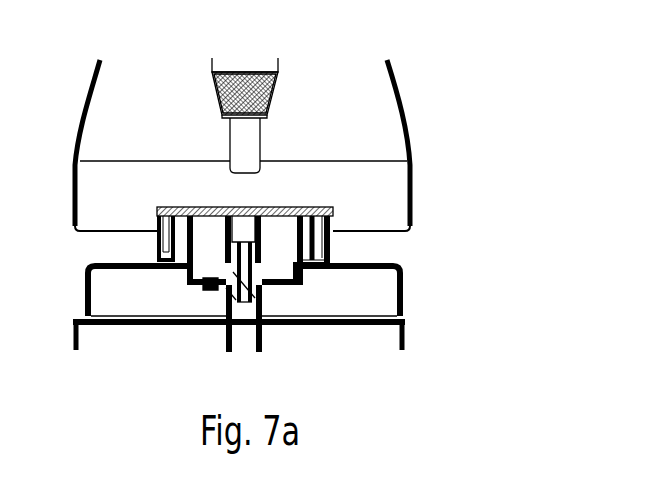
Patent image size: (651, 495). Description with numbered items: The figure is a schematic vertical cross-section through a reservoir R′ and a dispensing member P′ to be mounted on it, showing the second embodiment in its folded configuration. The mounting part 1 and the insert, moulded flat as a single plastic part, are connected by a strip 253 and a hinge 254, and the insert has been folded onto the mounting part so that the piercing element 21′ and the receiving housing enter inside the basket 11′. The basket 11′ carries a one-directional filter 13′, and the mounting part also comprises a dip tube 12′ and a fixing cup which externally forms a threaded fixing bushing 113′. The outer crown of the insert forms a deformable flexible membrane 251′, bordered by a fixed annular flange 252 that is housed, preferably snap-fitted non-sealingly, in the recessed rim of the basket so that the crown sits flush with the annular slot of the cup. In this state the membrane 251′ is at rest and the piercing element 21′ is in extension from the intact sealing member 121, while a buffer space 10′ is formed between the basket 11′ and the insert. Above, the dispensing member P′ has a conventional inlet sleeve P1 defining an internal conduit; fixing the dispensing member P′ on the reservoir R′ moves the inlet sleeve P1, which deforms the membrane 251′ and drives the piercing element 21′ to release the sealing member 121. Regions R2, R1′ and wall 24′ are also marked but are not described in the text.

The fixed annular flange 252 is at (197, 207).
The deformable flexible membrane 251′ is at (230, 243).
The dispensing member P′ is at (284, 52).
The inlet sleeve P1 is at (243, 138).
The strip 253 is at (306, 210).
The hinge 254 is at (342, 215).
The mounting part 1 is at (337, 229).
The second recess R2 is at (333, 247).
The first recess body R1′ is at (414, 278).
The reservoir R′ is at (413, 309).
The threaded fixing bushing 113′ is at (157, 233).
The housing side wall 24′ is at (187, 270).
The one-directional filter 13′ is at (205, 284).
The piercing element 21′ is at (230, 290).
The sealing member 121 is at (237, 303).
The dip tube 12′ is at (265, 328).
The buffer space 10′ is at (278, 262).
The basket 11′ is at (312, 275).